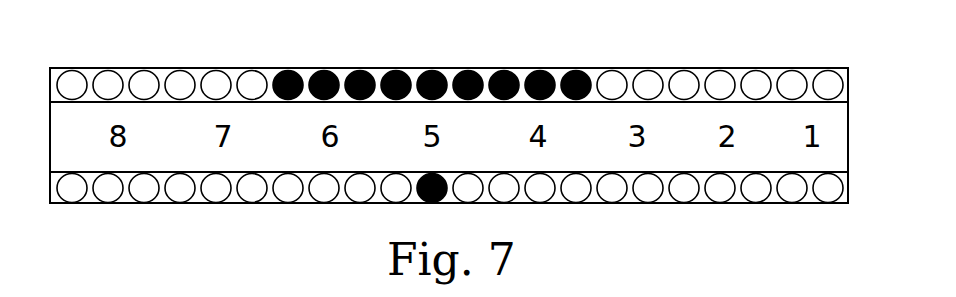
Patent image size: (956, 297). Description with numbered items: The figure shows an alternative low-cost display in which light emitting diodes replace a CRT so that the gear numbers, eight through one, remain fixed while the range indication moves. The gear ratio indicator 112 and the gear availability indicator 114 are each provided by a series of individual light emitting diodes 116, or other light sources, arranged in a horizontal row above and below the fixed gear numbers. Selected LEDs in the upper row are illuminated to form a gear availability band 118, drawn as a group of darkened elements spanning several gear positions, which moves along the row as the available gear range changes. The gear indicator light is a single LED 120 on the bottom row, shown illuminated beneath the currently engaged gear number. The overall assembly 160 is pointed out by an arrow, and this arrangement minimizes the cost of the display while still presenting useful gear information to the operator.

The gear ratio indicator 112 is at (272, 197).
The gear availability indicator 114 is at (210, 66).
The light emitting diodes 116 is at (143, 82).
The gear availability band 118 is at (598, 61).
The single LED 120 is at (433, 203).
The multi-zone electrode device 160 is at (660, 52).